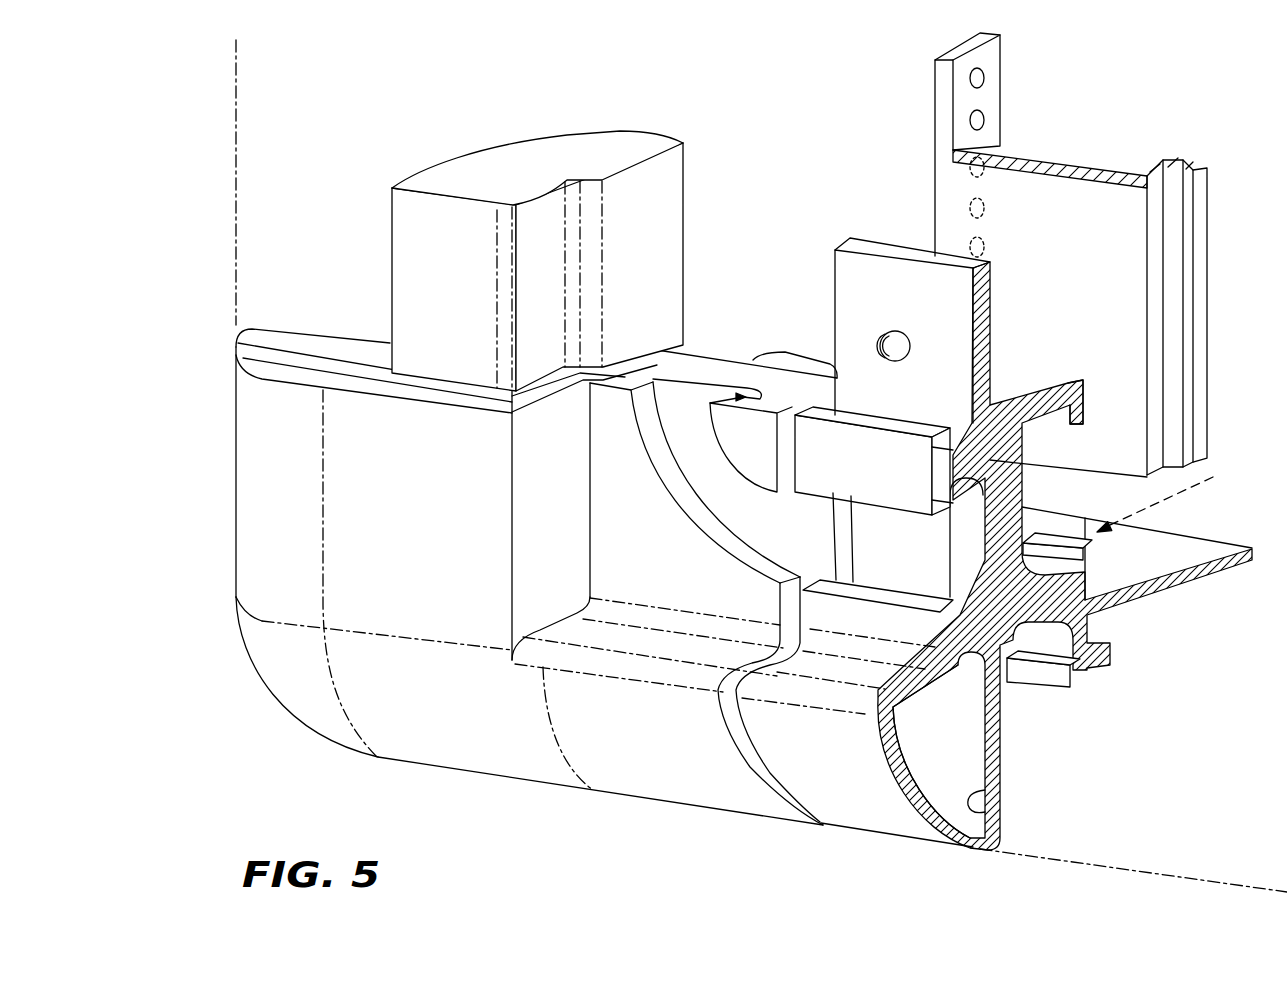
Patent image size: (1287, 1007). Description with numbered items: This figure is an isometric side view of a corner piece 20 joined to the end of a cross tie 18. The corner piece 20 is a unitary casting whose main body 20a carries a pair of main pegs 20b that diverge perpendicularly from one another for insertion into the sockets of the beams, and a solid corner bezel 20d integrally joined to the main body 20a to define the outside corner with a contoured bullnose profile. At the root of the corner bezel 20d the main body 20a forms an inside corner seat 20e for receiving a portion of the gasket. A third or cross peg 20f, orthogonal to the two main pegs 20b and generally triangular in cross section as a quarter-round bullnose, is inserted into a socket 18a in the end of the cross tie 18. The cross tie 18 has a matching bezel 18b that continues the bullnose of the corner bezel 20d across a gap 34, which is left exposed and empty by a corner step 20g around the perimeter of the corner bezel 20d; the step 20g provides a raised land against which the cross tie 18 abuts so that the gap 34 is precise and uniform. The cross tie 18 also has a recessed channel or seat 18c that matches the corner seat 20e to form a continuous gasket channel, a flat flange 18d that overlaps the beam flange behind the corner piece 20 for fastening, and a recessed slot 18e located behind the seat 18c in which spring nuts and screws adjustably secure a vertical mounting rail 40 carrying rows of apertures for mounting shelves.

The cross tie 18 is at (895, 835).
The socket 18a is at (967, 800).
The cross tie bezel 18b is at (878, 677).
The recessed channel or seat 18c is at (1078, 712).
The flat flange 18d is at (1200, 545).
The recessed slot 18e is at (1025, 480).
The corner piece 20 is at (265, 686).
The main body 20a is at (697, 353).
The main stubs or pegs 20b is at (487, 183).
The corner bezel 20d is at (263, 458).
The inside corner seat 20e is at (702, 477).
The cross peg 20f is at (957, 757).
The corner step 20g is at (237, 345).
The gap 34 is at (788, 800).
The vertical mounting rail 40 is at (1103, 167).